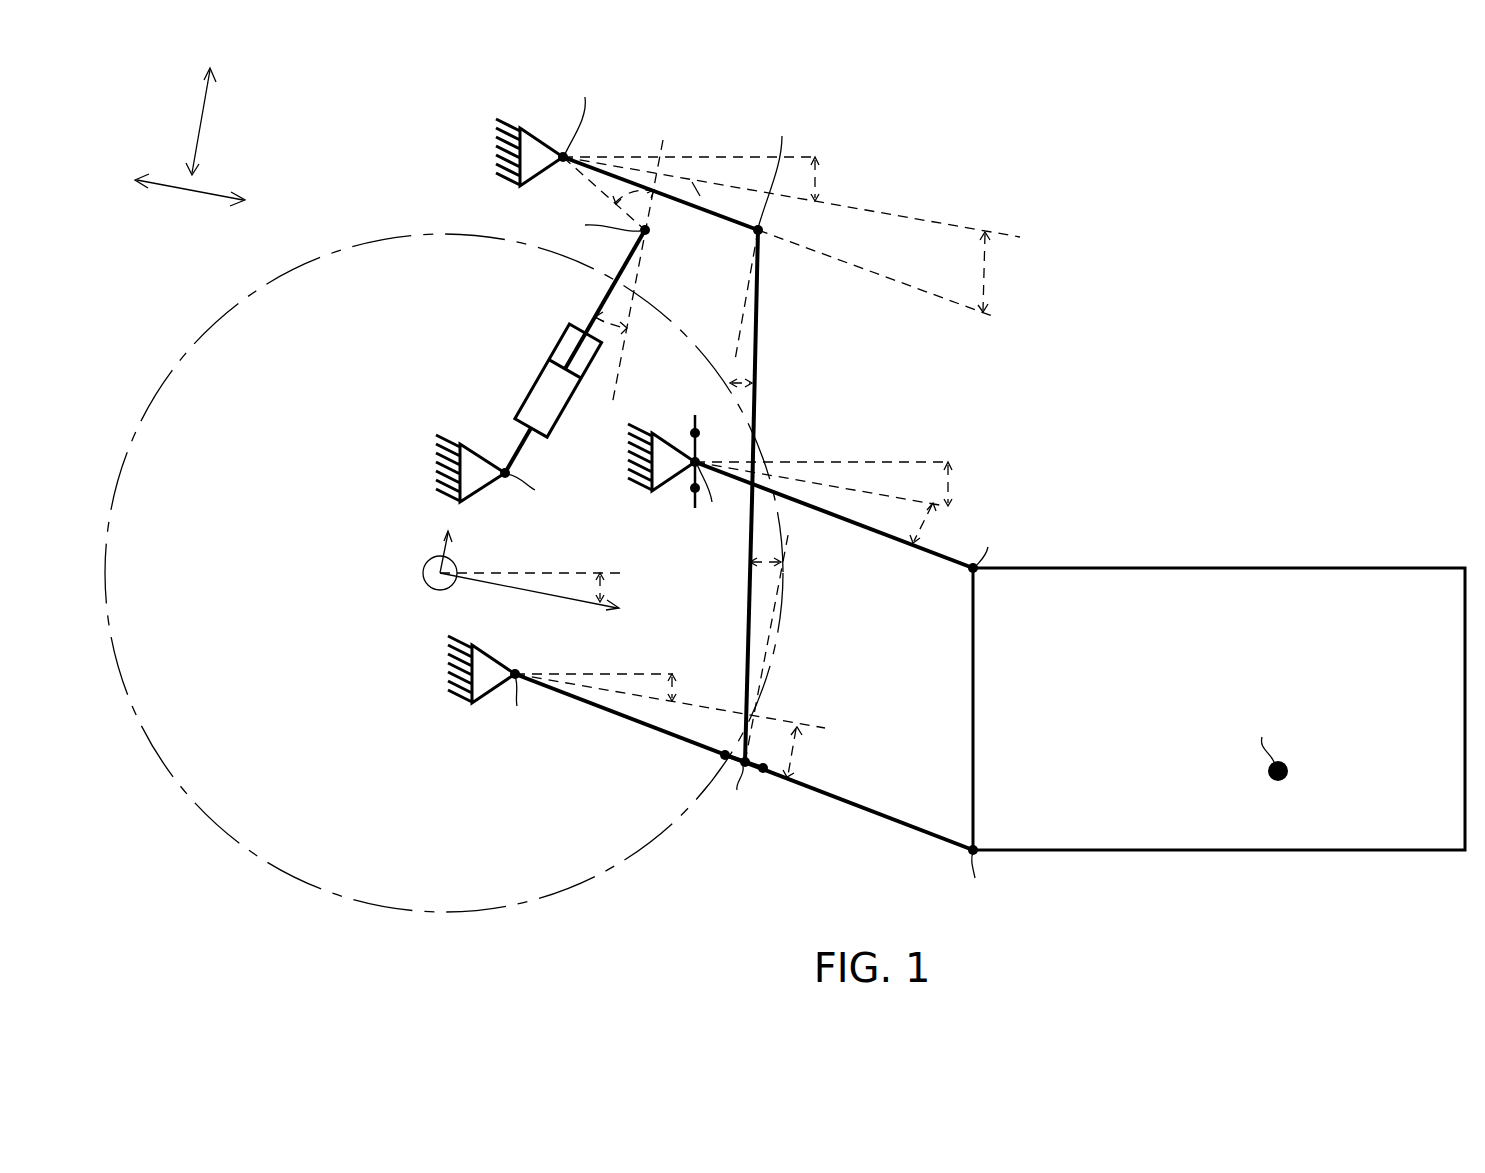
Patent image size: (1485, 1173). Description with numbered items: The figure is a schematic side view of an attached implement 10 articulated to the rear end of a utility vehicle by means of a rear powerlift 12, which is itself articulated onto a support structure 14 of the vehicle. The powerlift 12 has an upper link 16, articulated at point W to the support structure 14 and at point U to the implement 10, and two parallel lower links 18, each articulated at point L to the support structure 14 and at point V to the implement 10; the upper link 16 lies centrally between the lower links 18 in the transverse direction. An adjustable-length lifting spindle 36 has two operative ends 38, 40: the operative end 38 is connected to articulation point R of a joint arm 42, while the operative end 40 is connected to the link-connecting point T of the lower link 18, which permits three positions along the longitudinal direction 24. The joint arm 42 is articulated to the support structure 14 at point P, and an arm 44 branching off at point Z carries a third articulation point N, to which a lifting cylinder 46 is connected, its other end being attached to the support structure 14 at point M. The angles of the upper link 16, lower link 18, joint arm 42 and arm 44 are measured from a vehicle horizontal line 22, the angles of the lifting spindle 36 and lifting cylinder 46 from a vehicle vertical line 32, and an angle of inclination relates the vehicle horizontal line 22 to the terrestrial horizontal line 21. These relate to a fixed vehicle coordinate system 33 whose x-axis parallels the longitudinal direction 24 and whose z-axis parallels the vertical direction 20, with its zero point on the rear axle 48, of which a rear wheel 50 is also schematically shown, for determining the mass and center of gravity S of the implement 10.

The attached implement 10 is at (1299, 500).
The rear powerlift 12 is at (848, 393).
The support structure 14 is at (500, 150).
The upper link 16 is at (851, 528).
The lower link 18 is at (832, 805).
The vertical direction 20 is at (203, 118).
The terrestrial horizontal line 21 is at (815, 157).
The vehicle horizontal line 22 is at (932, 235).
The longitudinal direction 24 is at (180, 190).
The vehicle vertical line 32 is at (635, 293).
The vehicle coordinate system 33 is at (423, 530).
The lifting spindle 36 is at (757, 345).
The operative end 38 is at (755, 287).
The operative end 40 is at (740, 735).
The joint arm 42 is at (700, 193).
The arm 44 is at (658, 207).
The lifting cylinder 46 is at (525, 377).
The rear axle 48 is at (432, 585).
The rear wheel 50 is at (405, 233).